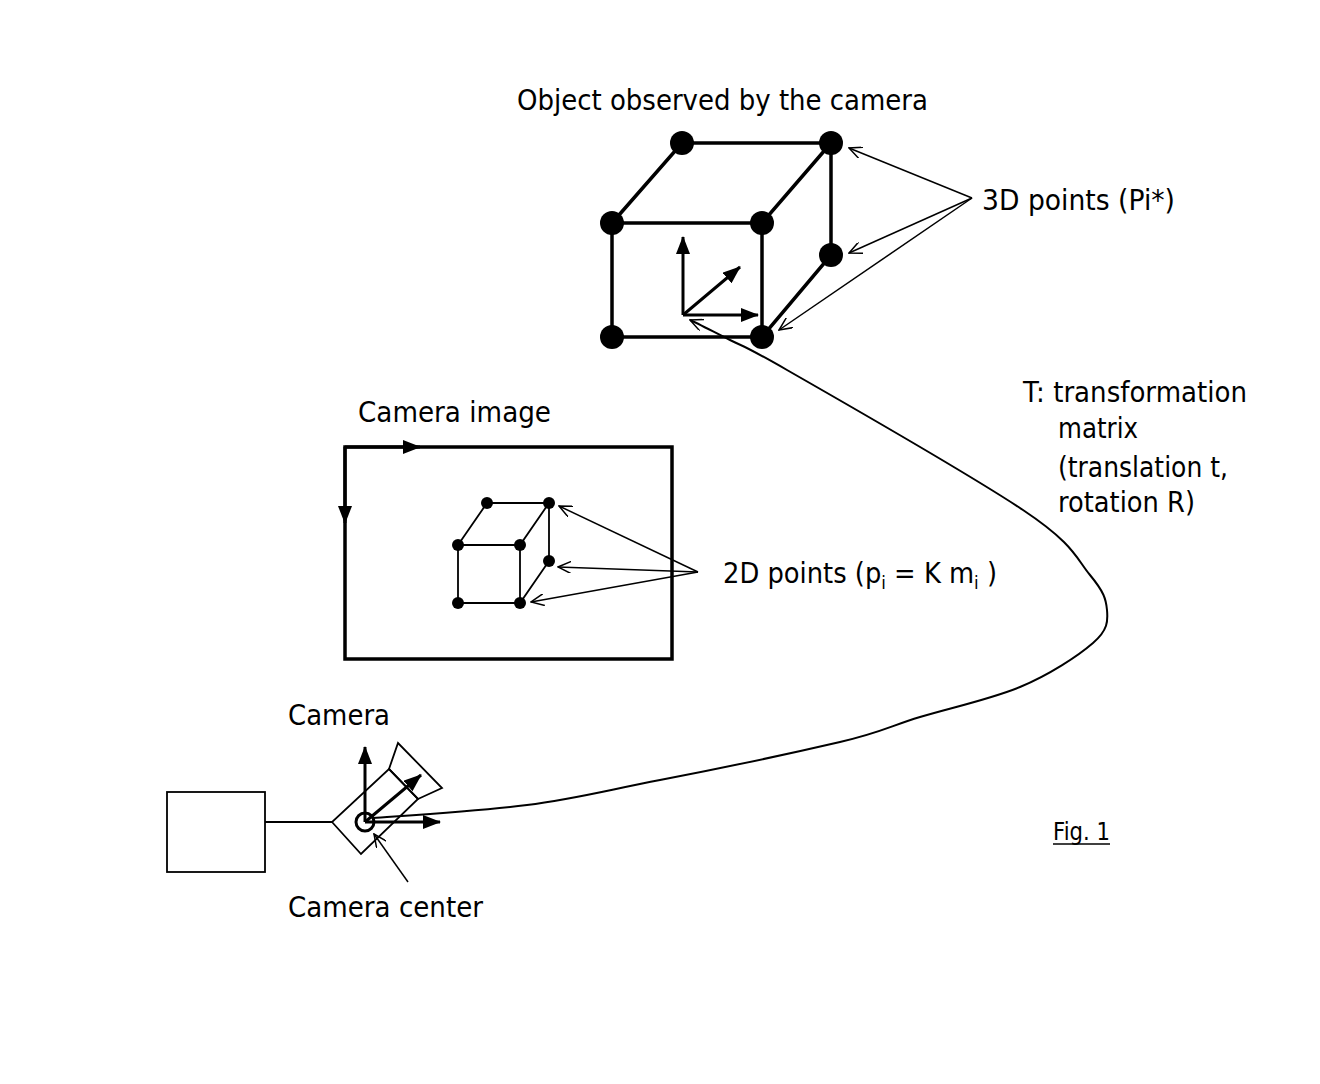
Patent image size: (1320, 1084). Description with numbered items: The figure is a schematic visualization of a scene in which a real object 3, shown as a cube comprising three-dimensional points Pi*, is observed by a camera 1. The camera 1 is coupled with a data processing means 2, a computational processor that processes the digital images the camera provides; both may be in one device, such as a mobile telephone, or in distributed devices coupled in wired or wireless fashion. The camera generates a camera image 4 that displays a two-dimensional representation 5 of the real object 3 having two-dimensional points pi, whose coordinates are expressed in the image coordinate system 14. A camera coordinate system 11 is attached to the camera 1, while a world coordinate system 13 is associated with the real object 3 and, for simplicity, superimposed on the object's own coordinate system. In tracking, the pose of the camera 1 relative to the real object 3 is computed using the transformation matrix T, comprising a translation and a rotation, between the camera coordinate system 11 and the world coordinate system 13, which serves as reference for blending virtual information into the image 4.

The camera 1 is at (442, 782).
The data processing means 2 is at (225, 790).
The real object 3 is at (583, 194).
The camera image 4 is at (333, 568).
The 2-dimensional representation 5 is at (453, 568).
The camera coordinate system 11 is at (423, 828).
The world coordinate system 13 is at (672, 295).
The image coordinate system 14 is at (345, 468).